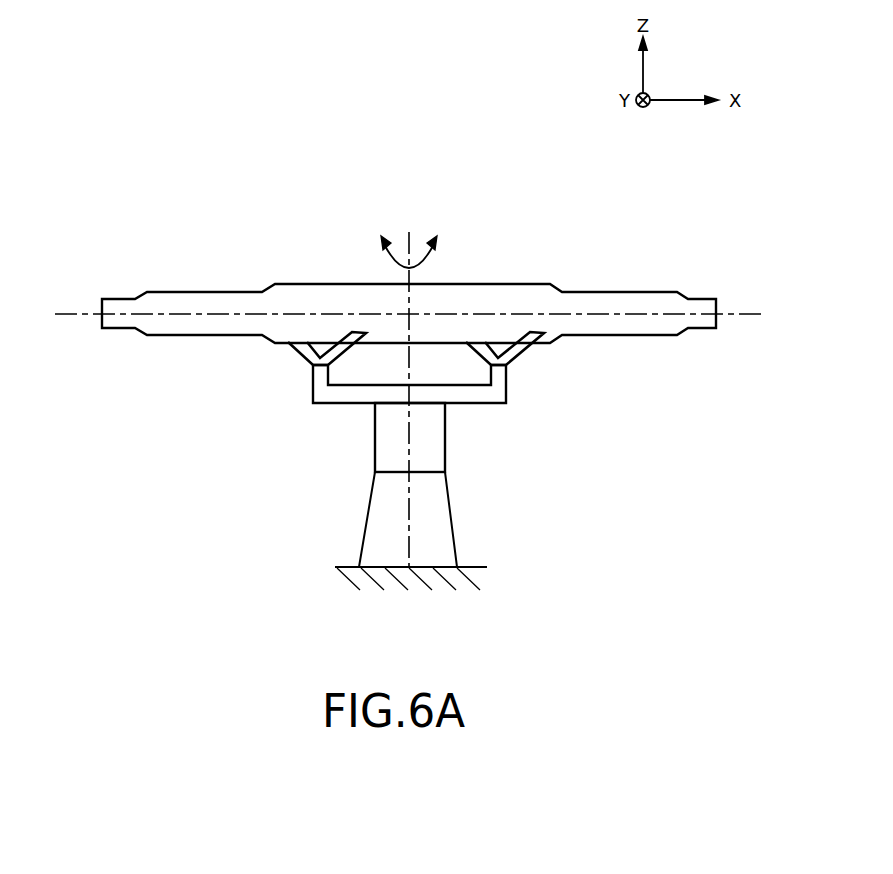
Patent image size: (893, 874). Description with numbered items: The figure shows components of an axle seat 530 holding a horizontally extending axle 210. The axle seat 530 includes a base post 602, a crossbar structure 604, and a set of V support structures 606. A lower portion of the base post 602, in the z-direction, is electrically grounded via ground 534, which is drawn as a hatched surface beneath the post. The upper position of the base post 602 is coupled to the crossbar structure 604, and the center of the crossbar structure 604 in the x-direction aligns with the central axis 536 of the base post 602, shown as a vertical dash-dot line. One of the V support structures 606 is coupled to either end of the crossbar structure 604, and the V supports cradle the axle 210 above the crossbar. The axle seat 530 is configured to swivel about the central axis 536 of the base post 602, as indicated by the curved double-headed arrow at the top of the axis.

The shaft 210 is at (642, 292).
The axle seat 530 is at (457, 445).
The ground 534 is at (477, 567).
The central axis 536 is at (409, 232).
The base post 602 is at (390, 448).
The crossbar structure 604 is at (313, 387).
The V support structures 606 is at (420, 262).